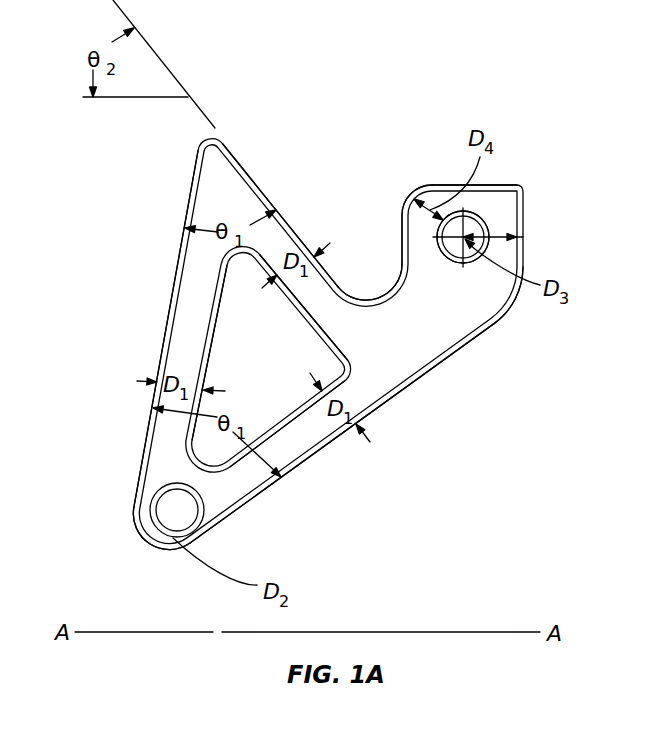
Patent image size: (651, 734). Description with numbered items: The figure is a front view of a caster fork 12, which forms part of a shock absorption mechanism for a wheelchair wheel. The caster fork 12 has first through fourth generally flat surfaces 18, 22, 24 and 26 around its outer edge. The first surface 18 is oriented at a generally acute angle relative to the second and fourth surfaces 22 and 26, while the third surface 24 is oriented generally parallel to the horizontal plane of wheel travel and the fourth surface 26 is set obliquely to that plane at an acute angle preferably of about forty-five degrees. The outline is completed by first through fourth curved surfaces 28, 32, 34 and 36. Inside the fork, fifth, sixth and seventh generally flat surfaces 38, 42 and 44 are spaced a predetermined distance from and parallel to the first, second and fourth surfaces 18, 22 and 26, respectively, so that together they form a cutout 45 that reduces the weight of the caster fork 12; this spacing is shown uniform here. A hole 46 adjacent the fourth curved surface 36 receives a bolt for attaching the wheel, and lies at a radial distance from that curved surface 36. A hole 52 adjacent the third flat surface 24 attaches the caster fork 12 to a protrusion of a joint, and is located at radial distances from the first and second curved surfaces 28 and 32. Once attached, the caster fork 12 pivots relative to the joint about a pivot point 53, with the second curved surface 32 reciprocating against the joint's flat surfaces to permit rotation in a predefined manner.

The caster fork 12 is at (397, 55).
The first generally flat surface 18 is at (168, 320).
The second generally flat surface 22 is at (305, 460).
The third generally flat surface 24 is at (508, 185).
The fourth generally flat surface 26 is at (225, 140).
The first curved surface 28 is at (470, 342).
The second curved surface 32 is at (406, 206).
The third curved surface 34 is at (385, 294).
The fourth curved surface 36 is at (168, 555).
The fifth generally flat surface 38 is at (208, 372).
The sixth generally flat surface 42 is at (303, 410).
The seventh generally flat surface 44 is at (300, 304).
The cutout 45 is at (228, 327).
The hole 46 is at (205, 511).
The hole 52 is at (487, 226).
The pivot point 53 is at (478, 256).